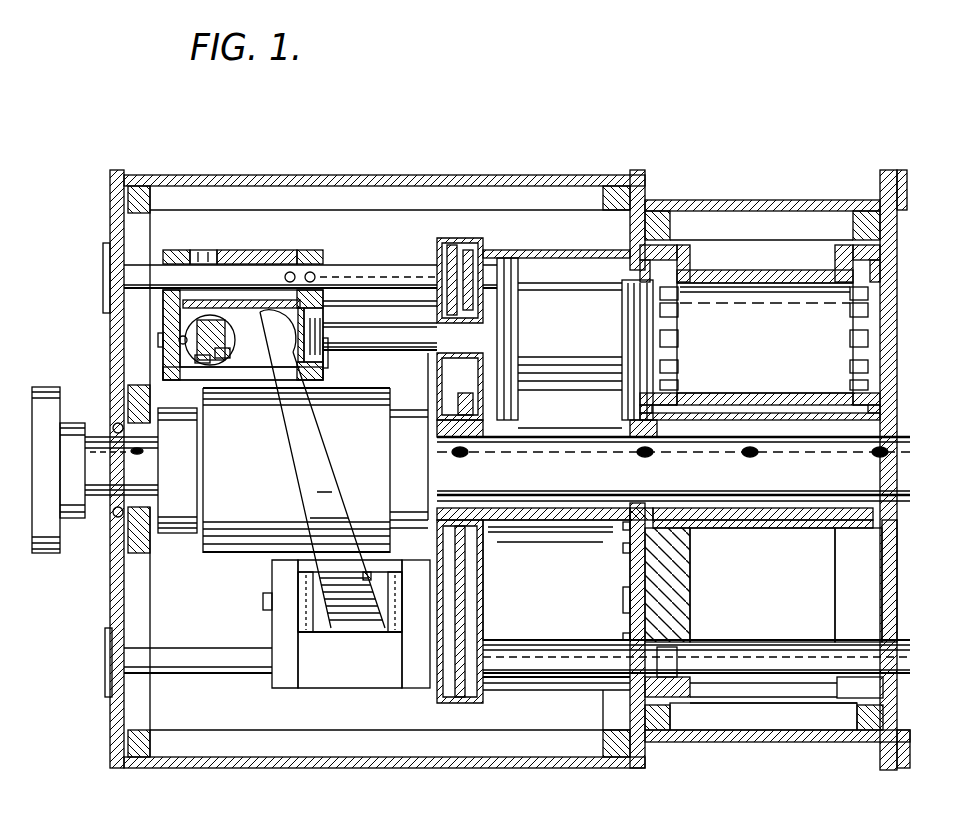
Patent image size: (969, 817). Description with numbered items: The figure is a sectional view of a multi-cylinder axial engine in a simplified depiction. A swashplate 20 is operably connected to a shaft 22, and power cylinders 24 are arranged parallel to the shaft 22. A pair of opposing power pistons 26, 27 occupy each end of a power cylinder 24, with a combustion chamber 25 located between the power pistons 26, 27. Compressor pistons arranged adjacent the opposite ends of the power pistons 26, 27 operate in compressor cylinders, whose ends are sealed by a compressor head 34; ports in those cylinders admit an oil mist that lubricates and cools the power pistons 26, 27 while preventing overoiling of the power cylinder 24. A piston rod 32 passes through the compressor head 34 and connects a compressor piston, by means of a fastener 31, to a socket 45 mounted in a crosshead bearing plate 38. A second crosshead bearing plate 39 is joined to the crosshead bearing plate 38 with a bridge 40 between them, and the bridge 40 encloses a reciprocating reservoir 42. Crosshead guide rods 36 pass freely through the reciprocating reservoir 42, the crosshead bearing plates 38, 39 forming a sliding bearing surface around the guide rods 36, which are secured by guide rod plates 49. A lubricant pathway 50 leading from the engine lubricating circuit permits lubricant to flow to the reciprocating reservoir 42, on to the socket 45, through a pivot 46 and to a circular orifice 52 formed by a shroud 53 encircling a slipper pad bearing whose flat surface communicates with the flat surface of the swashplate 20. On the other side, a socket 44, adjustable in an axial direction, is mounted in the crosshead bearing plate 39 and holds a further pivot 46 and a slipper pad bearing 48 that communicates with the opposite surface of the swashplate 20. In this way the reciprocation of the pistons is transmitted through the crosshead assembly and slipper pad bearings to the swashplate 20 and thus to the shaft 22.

The swashplate 20 is at (312, 437).
The shaft 22 is at (588, 481).
The power cylinder 24 is at (733, 271).
The combustion chamber 25 is at (770, 351).
The power piston 26 is at (606, 394).
The power piston 27 is at (856, 352).
The fastener 31 is at (323, 327).
The piston rod 32 is at (402, 350).
The compressor head 34 is at (437, 388).
The crosshead guide rod 36 is at (385, 265).
The crosshead bearing plate 38 is at (327, 252).
The second crosshead bearing plate 39 is at (182, 250).
The bridge 40 is at (268, 252).
The reciprocating reservoir 42 is at (218, 250).
The socket 44 is at (197, 380).
The socket 45 is at (329, 365).
The pivot 46 is at (368, 576).
The slipper pad bearing 48 is at (213, 342).
The guide rod plate 49 is at (108, 694).
The lubricant pathway 50 is at (292, 271).
The circular orifice 52 is at (222, 360).
The shroud 53 is at (222, 360).